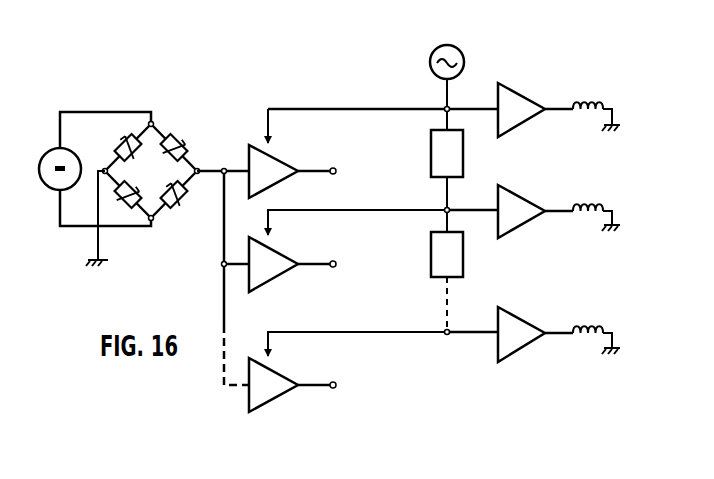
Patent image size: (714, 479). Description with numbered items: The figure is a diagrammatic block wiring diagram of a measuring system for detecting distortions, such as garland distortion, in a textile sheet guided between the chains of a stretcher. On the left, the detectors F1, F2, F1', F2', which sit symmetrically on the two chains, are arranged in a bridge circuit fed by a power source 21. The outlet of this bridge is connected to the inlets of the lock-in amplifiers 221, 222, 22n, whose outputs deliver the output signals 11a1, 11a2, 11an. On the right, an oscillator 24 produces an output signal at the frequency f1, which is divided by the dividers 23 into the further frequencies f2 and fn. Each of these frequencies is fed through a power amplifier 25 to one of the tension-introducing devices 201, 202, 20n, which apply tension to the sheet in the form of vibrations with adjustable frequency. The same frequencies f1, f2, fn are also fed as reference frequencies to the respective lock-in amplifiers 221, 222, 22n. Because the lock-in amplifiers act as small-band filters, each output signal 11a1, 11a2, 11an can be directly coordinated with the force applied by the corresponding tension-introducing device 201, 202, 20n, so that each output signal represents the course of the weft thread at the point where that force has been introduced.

The power source 21 is at (52, 192).
The detector F1 is at (120, 147).
The detector F2 is at (128, 227).
The detector F1' is at (174, 210).
The detector F2' is at (174, 133).
The lock-in amplifier 221 is at (275, 178).
The lock-in amplifier 222 is at (275, 273).
The lock-in amplifier 22n is at (280, 390).
The output signal 11a1 is at (330, 158).
The output signal 11a2 is at (330, 251).
The output signal 11an is at (332, 372).
The frequency f1 is at (279, 128).
The frequency f2 is at (357, 227).
The frequency fn is at (357, 345).
The divider 23 is at (463, 156).
The oscillator 24 is at (464, 55).
The power amplifier 25 is at (520, 122).
The tension-introducing device 201 is at (607, 79).
The tension-introducing device 202 is at (607, 181).
The tension-introducing device 20n is at (607, 308).